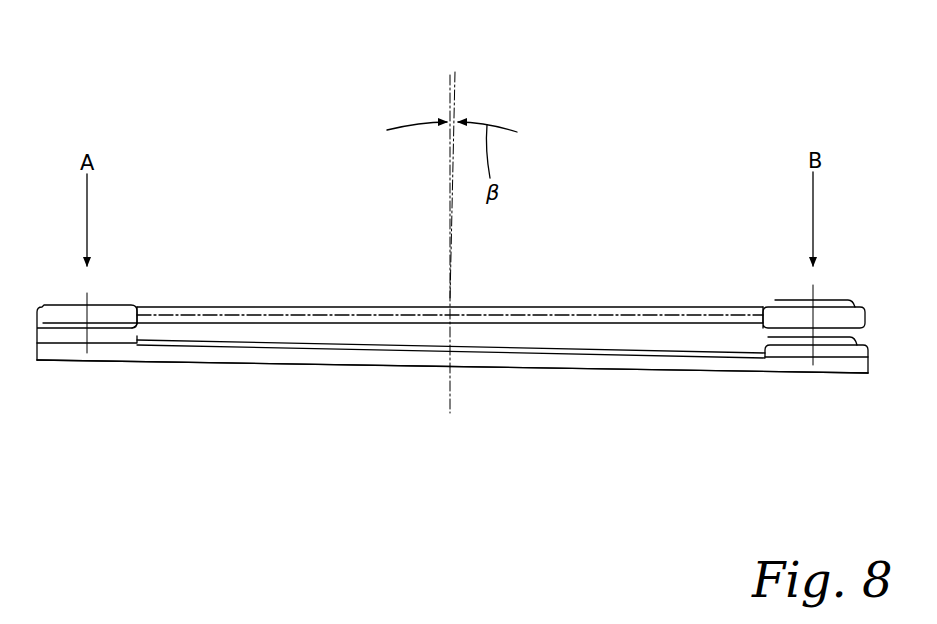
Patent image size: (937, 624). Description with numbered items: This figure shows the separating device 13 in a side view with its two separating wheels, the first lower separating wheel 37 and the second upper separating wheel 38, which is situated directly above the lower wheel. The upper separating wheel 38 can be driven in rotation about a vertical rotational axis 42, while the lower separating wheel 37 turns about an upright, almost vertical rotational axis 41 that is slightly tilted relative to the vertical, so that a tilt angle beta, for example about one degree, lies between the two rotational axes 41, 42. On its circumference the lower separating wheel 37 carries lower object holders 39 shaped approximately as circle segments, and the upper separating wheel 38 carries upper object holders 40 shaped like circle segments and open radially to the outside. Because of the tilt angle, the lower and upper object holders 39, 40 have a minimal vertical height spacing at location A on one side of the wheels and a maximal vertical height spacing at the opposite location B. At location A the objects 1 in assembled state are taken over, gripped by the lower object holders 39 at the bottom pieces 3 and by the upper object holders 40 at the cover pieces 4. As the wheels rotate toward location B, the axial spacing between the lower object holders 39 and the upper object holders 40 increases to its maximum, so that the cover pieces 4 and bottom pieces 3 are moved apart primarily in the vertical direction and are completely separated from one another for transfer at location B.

The object 1 is at (108, 312).
The bottom piece 3 is at (816, 401).
The cover piece 4 is at (838, 316).
The separating device 13 is at (452, 195).
The first lower separating wheel 37 is at (610, 362).
The second upper separating wheel 38 is at (612, 312).
The lower object holders 39 is at (157, 392).
The upper object holders 40 is at (158, 288).
The rotational axis 41 is at (453, 103).
The rotational axis 42 is at (450, 103).